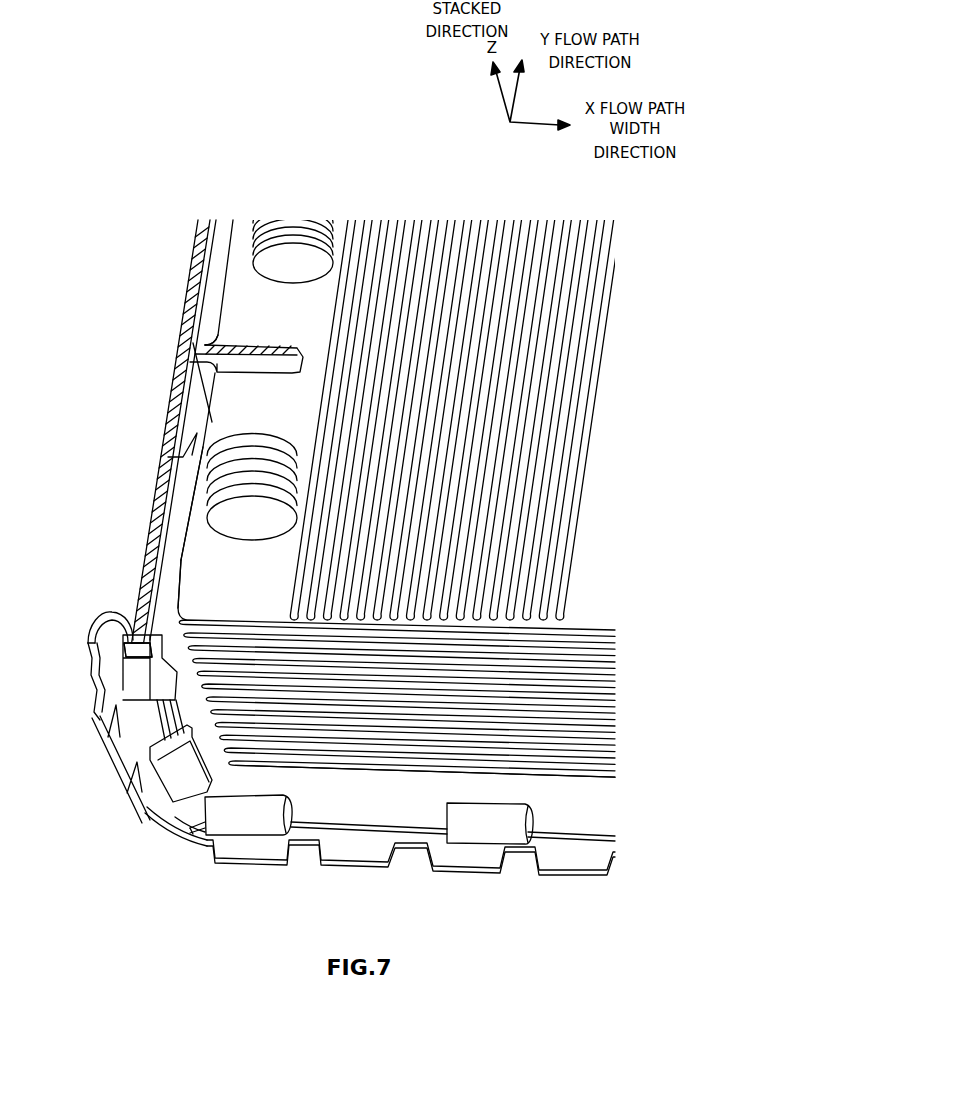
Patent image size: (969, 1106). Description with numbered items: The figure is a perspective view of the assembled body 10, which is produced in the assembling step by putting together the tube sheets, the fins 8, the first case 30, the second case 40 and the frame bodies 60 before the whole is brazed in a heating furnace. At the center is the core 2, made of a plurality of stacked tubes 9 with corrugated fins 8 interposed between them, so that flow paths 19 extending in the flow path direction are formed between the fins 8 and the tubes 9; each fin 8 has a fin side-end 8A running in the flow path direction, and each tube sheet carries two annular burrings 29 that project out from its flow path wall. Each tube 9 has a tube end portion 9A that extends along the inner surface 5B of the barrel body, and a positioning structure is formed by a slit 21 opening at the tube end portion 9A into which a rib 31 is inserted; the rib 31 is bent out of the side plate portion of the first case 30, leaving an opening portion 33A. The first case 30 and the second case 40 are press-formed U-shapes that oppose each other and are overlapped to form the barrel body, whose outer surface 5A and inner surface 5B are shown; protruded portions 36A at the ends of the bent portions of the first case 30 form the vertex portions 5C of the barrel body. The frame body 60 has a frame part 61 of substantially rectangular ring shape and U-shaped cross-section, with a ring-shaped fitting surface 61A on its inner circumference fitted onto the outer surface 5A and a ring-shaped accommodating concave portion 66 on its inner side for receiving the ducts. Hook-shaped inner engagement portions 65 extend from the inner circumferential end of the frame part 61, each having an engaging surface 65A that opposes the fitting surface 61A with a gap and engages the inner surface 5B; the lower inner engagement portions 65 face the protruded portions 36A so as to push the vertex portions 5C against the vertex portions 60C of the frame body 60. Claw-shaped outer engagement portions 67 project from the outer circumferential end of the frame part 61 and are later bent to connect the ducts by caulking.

The core 2 is at (557, 778).
The outer surface 5A is at (138, 634).
The inner surface 5B is at (167, 663).
The vertex portions 5C is at (193, 822).
The fins 8 is at (340, 333).
The fin side-end 8A is at (318, 447).
The tubes 9 is at (392, 767).
The tube end portion 9A is at (212, 422).
The assembled body 10 is at (201, 219).
The flow paths 19 is at (283, 280).
The slit 21 is at (233, 367).
The annular burrings 29 is at (250, 253).
The first case 30 is at (183, 460).
The rib 31 is at (257, 342).
The opening portion 33A is at (190, 455).
The protruded portions 36A is at (183, 820).
The second case 40 is at (193, 268).
The frame body 60 is at (475, 872).
The vertex portions 60C is at (183, 810).
The frame part 61 is at (120, 620).
The fitting surface 61A is at (107, 633).
The inner engagement portions 65 is at (152, 633).
The engaging surface 65A is at (143, 613).
The accommodating concave portion 66 is at (127, 667).
The outer engagement portions 67 is at (140, 783).